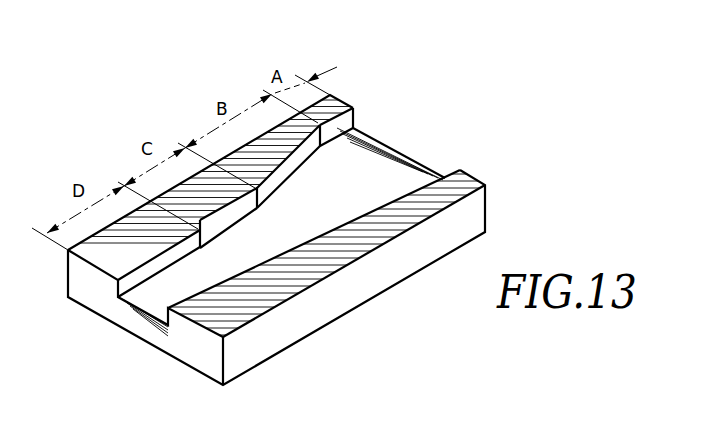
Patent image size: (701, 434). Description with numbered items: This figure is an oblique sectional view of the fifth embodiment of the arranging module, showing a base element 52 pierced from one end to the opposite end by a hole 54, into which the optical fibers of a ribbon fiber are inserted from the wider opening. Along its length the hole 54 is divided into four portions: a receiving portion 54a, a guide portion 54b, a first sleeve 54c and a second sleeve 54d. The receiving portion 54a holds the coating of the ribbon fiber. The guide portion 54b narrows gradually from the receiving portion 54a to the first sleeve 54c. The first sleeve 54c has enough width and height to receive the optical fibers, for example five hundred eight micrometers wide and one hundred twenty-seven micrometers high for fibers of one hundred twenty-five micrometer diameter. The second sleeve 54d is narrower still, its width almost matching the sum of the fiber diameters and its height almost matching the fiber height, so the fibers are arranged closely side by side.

The base element 52 is at (394, 282).
The hole 54 is at (413, 147).
The receiving portion 54a is at (363, 130).
The guide portion 54b is at (298, 163).
The first sleeve 54c is at (236, 218).
The second sleeve 54d is at (172, 292).